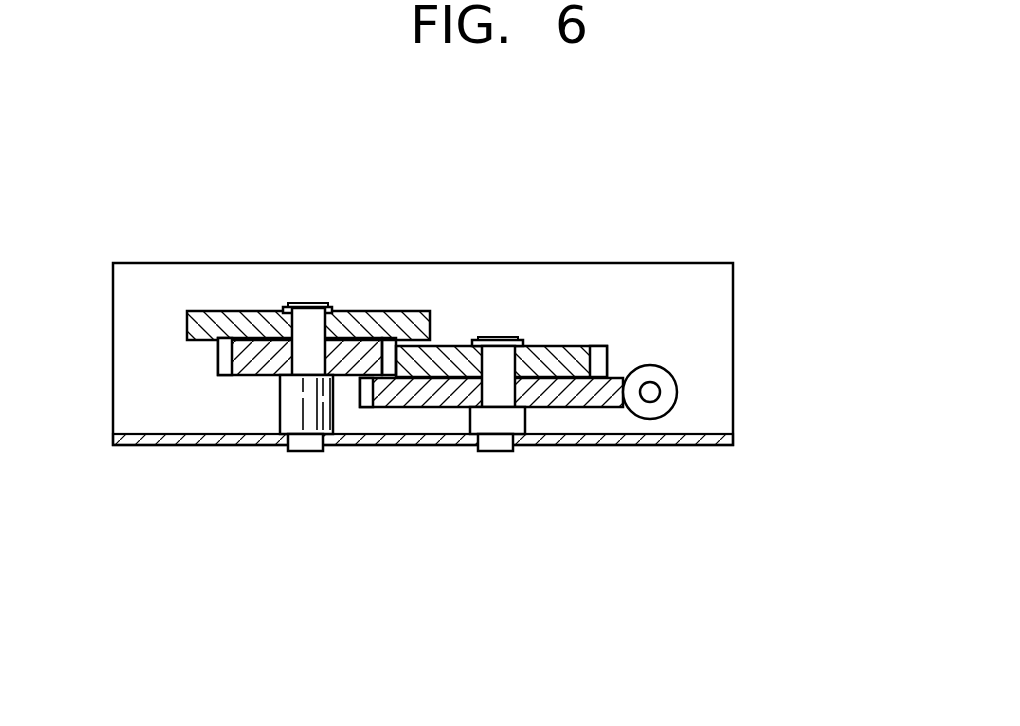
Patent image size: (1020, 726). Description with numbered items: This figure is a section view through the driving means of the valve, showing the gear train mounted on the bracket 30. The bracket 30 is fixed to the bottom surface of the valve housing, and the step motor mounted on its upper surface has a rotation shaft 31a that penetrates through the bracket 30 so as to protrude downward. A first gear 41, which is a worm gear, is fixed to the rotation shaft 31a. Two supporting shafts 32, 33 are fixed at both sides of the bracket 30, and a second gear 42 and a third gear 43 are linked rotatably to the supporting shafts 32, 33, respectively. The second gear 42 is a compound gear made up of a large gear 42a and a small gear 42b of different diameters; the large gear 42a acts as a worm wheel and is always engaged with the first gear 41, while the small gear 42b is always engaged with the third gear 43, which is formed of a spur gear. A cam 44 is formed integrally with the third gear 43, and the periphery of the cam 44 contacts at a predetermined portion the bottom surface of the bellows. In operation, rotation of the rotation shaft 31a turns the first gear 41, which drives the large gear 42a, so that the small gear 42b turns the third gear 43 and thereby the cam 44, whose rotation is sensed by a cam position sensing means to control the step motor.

The bracket 30 is at (698, 300).
The rotation shaft 31a is at (660, 392).
The supporting shaft 32 is at (497, 337).
The supporting shaft 33 is at (310, 304).
The first gear 41 is at (665, 410).
The second gear 42 is at (508, 362).
The large gear 42a is at (600, 393).
The small gear 42b is at (575, 362).
The third gear 43 is at (227, 357).
The cam 44 is at (227, 311).